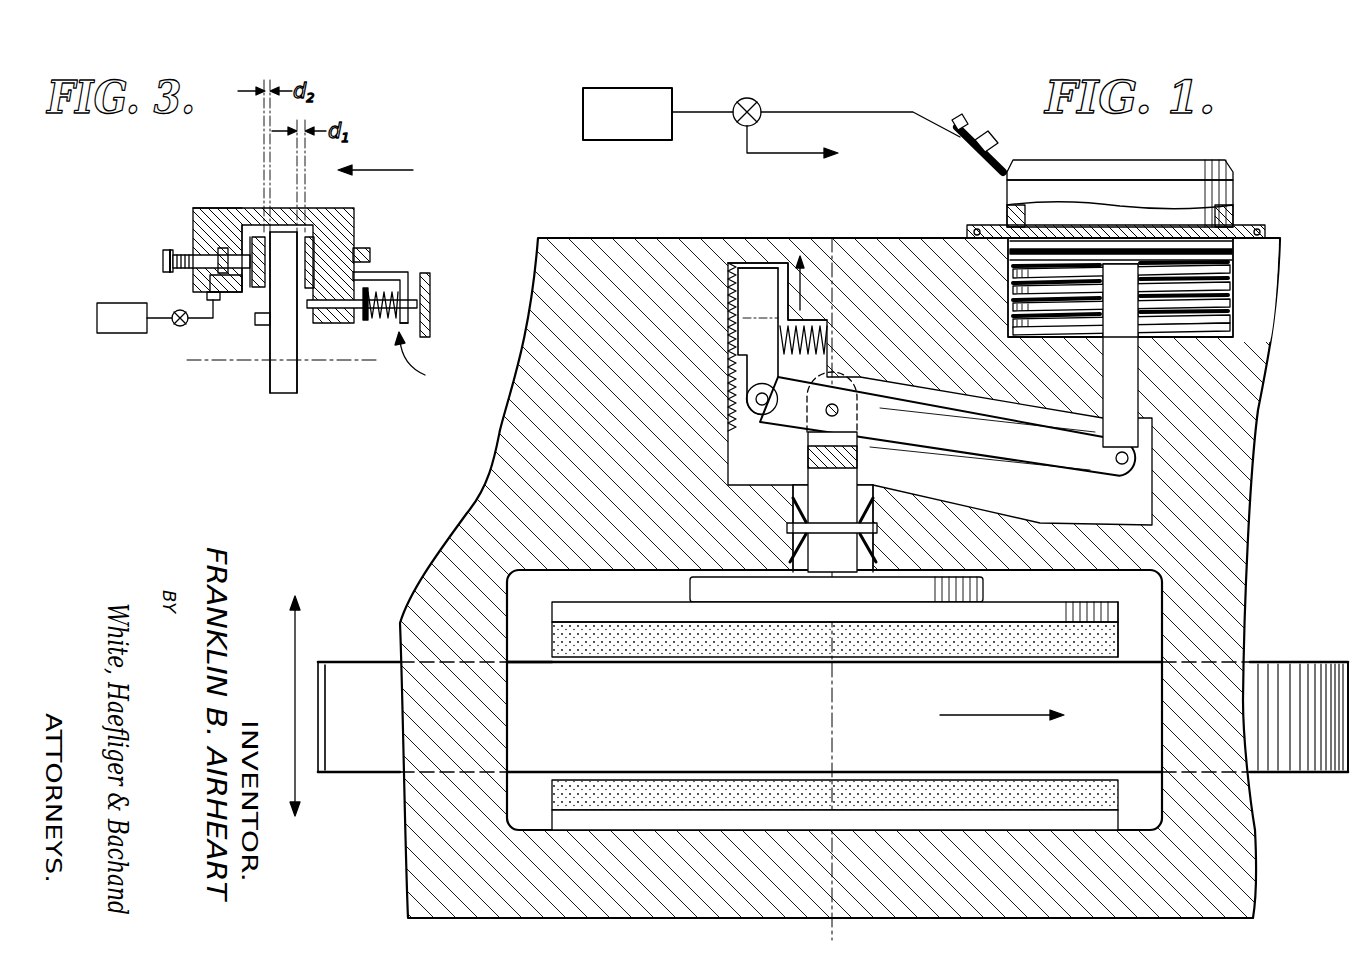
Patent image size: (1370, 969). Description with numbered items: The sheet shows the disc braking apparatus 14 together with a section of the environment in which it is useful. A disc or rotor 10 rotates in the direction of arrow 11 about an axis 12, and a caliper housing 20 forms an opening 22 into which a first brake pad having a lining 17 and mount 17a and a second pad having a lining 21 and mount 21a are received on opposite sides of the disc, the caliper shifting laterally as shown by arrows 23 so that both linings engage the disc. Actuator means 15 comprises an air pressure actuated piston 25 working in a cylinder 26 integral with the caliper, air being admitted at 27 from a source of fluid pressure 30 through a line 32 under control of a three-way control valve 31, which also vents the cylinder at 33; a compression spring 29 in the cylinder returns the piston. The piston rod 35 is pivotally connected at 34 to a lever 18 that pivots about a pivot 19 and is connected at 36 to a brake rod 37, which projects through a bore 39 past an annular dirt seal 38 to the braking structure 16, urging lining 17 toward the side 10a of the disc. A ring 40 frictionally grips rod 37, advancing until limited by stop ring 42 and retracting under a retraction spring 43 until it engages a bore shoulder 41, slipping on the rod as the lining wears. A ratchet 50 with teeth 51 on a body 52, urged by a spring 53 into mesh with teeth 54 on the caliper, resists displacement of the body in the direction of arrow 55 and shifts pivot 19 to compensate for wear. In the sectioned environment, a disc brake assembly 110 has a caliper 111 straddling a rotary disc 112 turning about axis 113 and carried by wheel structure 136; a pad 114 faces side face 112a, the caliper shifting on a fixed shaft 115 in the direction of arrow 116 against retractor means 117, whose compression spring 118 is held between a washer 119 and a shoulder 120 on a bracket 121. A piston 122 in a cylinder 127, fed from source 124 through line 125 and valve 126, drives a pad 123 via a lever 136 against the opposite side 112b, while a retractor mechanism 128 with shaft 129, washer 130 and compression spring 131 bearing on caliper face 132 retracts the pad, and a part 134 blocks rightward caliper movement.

In FIG. 1, the disc 10 is at (833, 717).
In FIG. 1, the side of the disc 10a is at (520, 660).
In FIG. 1, the arrow 11 is at (988, 726).
In FIG. 1, the axis 12 is at (838, 700).
In FIG. 1, the disc braking apparatus 14 is at (550, 457).
In FIG. 1, the actuator means 15 is at (1268, 190).
In FIG. 1, the braking structure 16 is at (1125, 598).
In FIG. 1, the brake lining 17 is at (560, 632).
In FIG. 1, the mount 17a is at (658, 600).
In FIG. 1, the lever 18 is at (955, 412).
In FIG. 1, the pivot 19 is at (755, 400).
In FIG. 1, the caliper housing 20 is at (840, 578).
In FIG. 1, the lining 21 is at (556, 795).
In FIG. 1, the mount 21a is at (690, 832).
In FIG. 1, the opening 22 is at (540, 572).
In FIG. 1, the arrows 23 is at (300, 648).
In FIG. 1, the piston 25 is at (1010, 246).
In FIG. 1, the cylinder 26 is at (1232, 288).
In FIG. 1, the air pressure admission 27 is at (1008, 150).
In FIG. 1, the compression spring 29 is at (1232, 327).
In FIG. 1, the source of fluid pressure 30 is at (658, 114).
In FIG. 1, the three-way control valve 31 is at (758, 103).
In FIG. 1, the line 32 is at (850, 112).
In FIG. 1, the vent 33 is at (780, 160).
In FIG. 1, the pivotal connection 34 is at (1140, 458).
In FIG. 1, the piston rod 35 is at (1140, 372).
In FIG. 1, the pivotal connection 36 is at (838, 404).
In FIG. 1, the brake rod 37 is at (860, 466).
In FIG. 1, the annular dirt seal 38 is at (792, 546).
In FIG. 1, the bore 39 is at (882, 568).
In FIG. 1, the ring 40 is at (875, 510).
In FIG. 1, the bore shoulder 41 is at (795, 505).
In FIG. 1, the stop ring 42 is at (880, 530).
In FIG. 1, the retraction spring 43 is at (790, 520).
In FIG. 1, the ratchet 50 is at (748, 252).
In FIG. 1, the teeth 51 is at (770, 285).
In FIG. 1, the body 52 is at (758, 341).
In FIG. 1, the spring 53 is at (828, 340).
In FIG. 1, the teeth 54 is at (731, 300).
In FIG. 1, the arrow 55 is at (808, 300).
In FIG. 3, the disc brake assembly 110 is at (112, 198).
In FIG. 3, the caliper 111 is at (330, 215).
In FIG. 3, the rotary disc 112 is at (282, 396).
In FIG. 3, the side face 112a is at (300, 385).
In FIG. 3, the opposite side 112b is at (268, 385).
In FIG. 3, the axis 113 is at (215, 362).
In FIG. 3, the pad 114 is at (310, 245).
In FIG. 3, the fixed shaft 115 is at (307, 310).
In FIG. 3, the arrow 116 is at (378, 170).
In FIG. 3, the retractor means 117 is at (425, 364).
In FIG. 3, the compression spring 118 is at (375, 275).
In FIG. 3, the washer 119 is at (370, 325).
In FIG. 3, the shoulder 120 is at (405, 315).
In FIG. 3, the bracket 121 is at (408, 290).
In FIG. 3, the piston 122 is at (245, 240).
In FIG. 3, the pad 123 is at (258, 288).
In FIG. 3, the source 124 is at (134, 318).
In FIG. 3, the line 125 is at (213, 300).
In FIG. 3, the valve 126 is at (182, 327).
In FIG. 3, the cylinder 127 is at (218, 280).
In FIG. 3, the retractor mechanism 128 is at (158, 262).
In FIG. 3, the shaft 129 is at (170, 262).
In FIG. 3, the washer 130 is at (210, 262).
In FIG. 3, the compression spring 131 is at (222, 258).
In FIG. 3, the face of the caliper 132 is at (210, 218).
In FIG. 3, the part 134 is at (365, 258).
In FIG. 3, the lever 136 is at (255, 240).